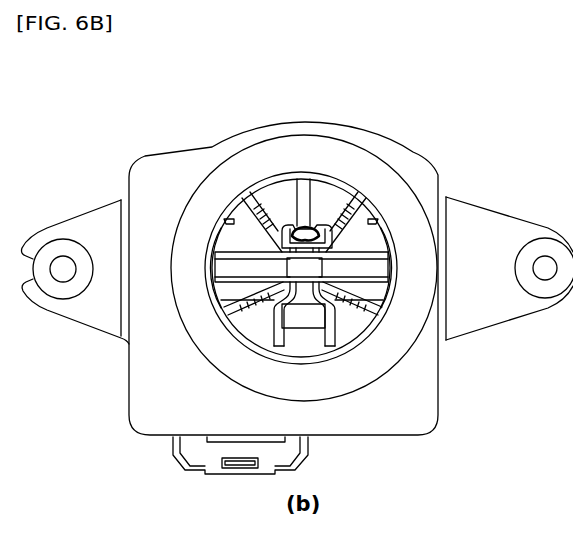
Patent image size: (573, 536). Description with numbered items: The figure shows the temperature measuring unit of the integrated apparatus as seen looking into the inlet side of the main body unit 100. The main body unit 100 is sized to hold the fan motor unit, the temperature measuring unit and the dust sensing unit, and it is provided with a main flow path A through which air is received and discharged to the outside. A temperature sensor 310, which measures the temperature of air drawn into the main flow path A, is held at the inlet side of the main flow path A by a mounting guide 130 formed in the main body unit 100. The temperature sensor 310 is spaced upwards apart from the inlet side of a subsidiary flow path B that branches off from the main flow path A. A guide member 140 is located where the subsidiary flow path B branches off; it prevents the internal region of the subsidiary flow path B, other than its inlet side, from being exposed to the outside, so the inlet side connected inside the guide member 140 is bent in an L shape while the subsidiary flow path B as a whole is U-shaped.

The main body unit 100 is at (400, 160).
The mounting guide 130 is at (321, 226).
The temperature sensor 310 is at (298, 226).
The guide member 140 is at (298, 318).
The main flow path A is at (354, 226).
The subsidiary flow path B is at (305, 268).